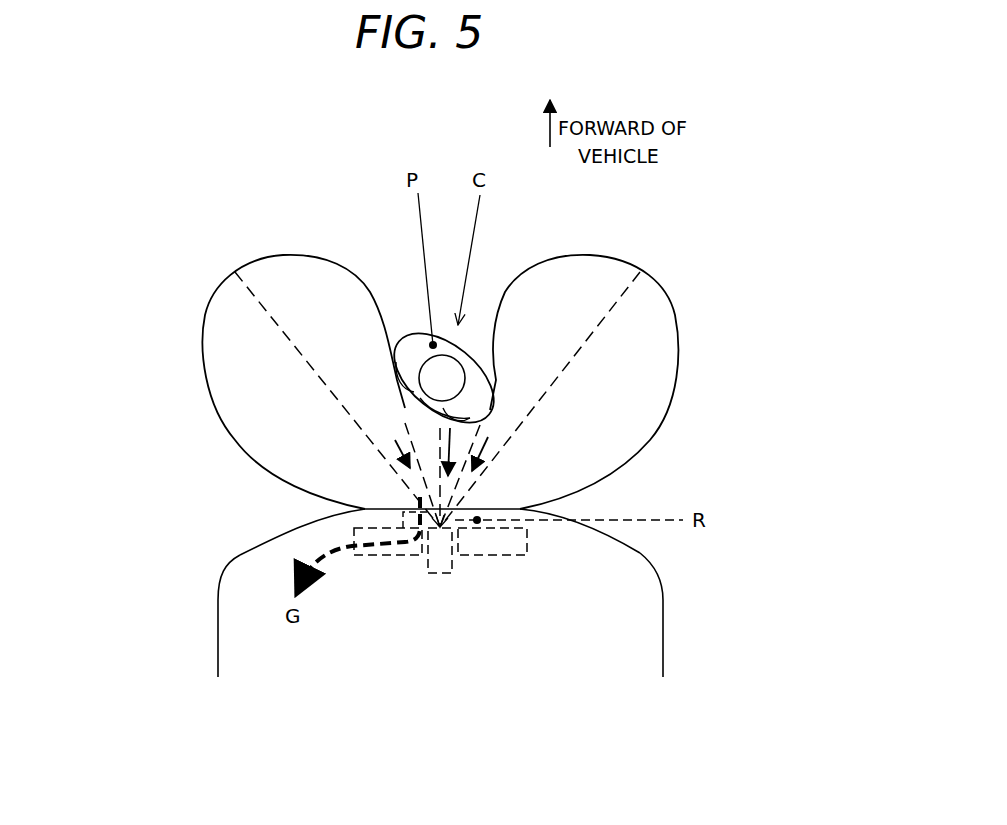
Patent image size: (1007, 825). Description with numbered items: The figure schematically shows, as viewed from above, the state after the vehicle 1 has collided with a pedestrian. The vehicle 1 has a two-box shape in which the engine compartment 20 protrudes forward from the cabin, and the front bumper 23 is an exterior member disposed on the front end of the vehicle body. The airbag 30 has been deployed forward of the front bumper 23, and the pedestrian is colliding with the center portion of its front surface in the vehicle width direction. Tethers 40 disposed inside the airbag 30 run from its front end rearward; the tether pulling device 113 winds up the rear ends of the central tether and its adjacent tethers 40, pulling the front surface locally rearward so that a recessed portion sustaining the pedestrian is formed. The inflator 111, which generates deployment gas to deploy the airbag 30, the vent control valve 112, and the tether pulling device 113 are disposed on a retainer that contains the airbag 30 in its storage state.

The vehicle 1 is at (186, 645).
The engine compartment 20 is at (218, 613).
The front bumper 23 is at (240, 555).
The airbag 30 is at (215, 291).
The tethers 40 is at (566, 389).
The inflator 111 is at (497, 553).
The vent control valve 112 is at (386, 553).
The tether pulling device 113 is at (442, 572).